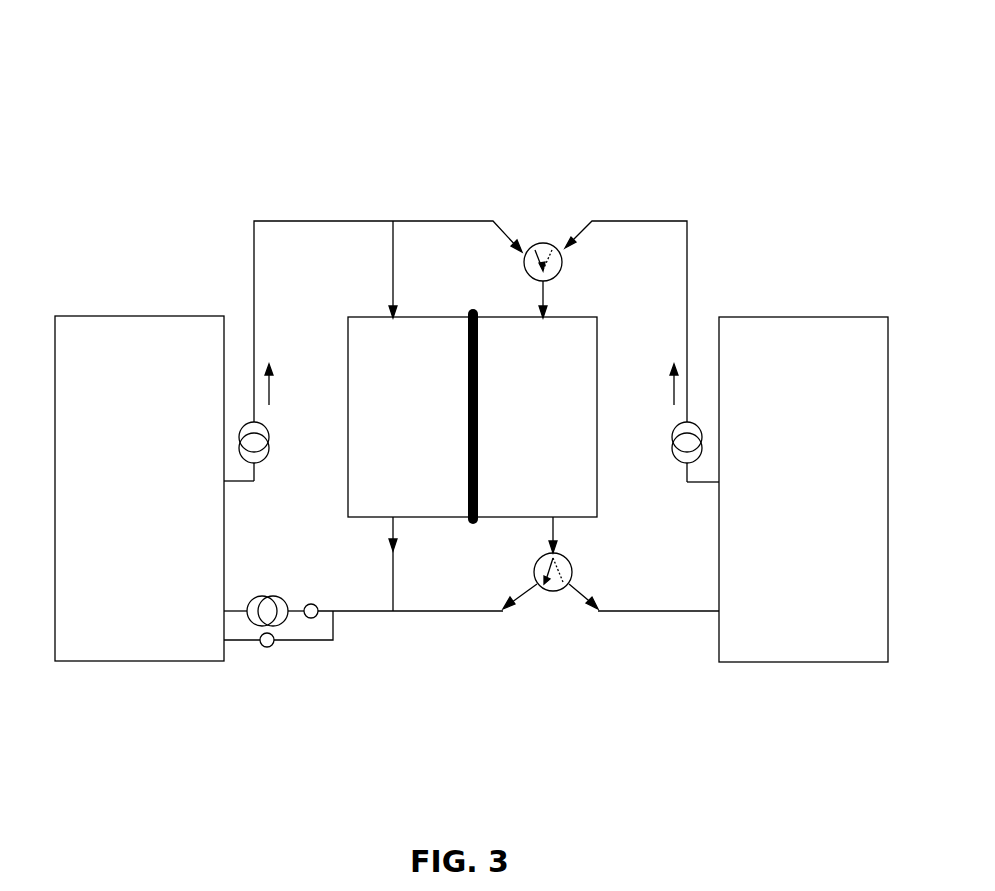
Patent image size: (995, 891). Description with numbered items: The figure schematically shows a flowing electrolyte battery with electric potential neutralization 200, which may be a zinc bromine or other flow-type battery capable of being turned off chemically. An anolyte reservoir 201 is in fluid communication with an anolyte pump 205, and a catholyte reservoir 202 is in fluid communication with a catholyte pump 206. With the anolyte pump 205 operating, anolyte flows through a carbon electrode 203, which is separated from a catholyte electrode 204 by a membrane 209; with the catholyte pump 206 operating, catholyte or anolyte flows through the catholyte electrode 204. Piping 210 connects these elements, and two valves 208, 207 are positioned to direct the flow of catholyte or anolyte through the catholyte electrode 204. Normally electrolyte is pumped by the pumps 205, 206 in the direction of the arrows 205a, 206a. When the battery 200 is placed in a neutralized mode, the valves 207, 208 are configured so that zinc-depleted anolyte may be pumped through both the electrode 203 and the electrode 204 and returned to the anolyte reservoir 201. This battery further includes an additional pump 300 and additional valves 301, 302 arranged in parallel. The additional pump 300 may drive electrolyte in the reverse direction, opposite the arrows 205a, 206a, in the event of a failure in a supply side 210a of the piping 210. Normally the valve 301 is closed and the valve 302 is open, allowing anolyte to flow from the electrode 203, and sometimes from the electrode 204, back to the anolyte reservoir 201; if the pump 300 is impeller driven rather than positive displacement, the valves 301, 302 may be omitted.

The flowing electrolyte battery 200 is at (295, 78).
The anolyte reservoir 201 is at (139, 488).
The catholyte reservoir 202 is at (803, 489).
The carbon electrode 203 is at (410, 417).
The catholyte electrode 204 is at (535, 417).
The anolyte pump 205 is at (270, 452).
The arrow 205a is at (269, 386).
The catholyte pump 206 is at (672, 463).
The arrow 206a is at (670, 386).
The valve 207 is at (553, 592).
The valve 208 is at (543, 243).
The membrane 209 is at (463, 522).
The piping 210 is at (664, 214).
The supply side of piping 210a is at (301, 221).
The additional pump 300 is at (262, 596).
The additional valve 301 is at (311, 618).
The additional valve 302 is at (267, 647).